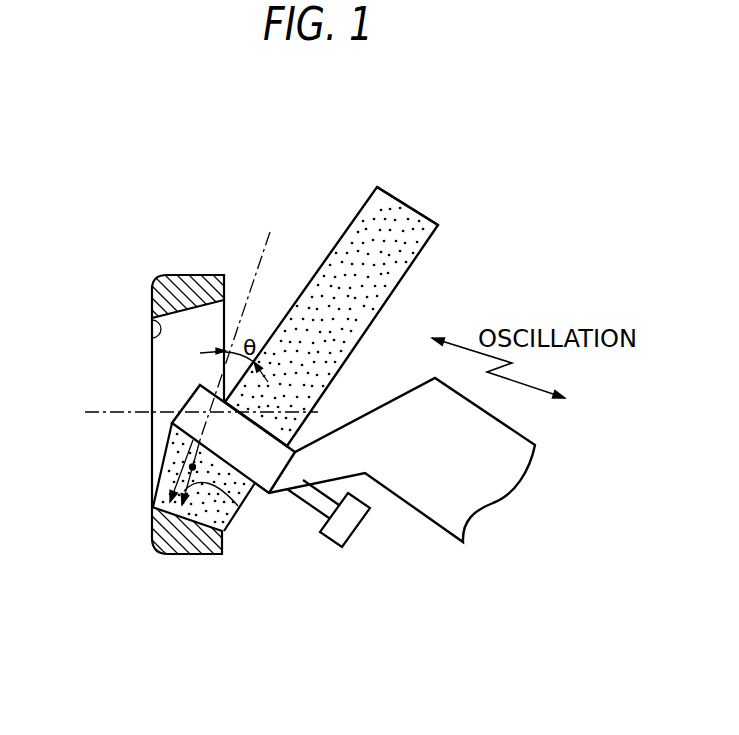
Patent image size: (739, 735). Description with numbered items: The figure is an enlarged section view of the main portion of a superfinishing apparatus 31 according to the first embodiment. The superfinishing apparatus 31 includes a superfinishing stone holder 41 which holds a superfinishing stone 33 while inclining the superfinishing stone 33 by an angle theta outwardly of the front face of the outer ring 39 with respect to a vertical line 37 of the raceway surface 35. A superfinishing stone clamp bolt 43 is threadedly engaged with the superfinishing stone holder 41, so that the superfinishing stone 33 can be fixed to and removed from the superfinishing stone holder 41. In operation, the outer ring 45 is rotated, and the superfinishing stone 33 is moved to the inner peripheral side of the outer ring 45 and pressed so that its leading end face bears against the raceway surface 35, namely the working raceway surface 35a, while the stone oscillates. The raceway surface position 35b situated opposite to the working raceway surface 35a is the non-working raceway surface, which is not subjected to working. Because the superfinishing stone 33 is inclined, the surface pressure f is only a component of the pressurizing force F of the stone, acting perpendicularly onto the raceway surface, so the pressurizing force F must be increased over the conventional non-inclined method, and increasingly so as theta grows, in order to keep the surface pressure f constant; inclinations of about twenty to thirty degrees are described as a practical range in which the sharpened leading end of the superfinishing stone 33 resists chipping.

The superfinishing apparatus 31 is at (373, 273).
The superfinishing stone 33 is at (440, 226).
The raceway surface 35 is at (195, 492).
The working raceway surface 35a is at (207, 522).
The non-working raceway surface 35b is at (152, 337).
The vertical line of raceway surface 37 is at (263, 258).
The outer ring 39 is at (223, 540).
The superfinishing stone holder 41 is at (494, 510).
The superfinishing stone clamp bolt 43 is at (360, 523).
The outer ring 45 is at (176, 413).
The pressurizing force F is at (168, 482).
The surface pressure f is at (240, 492).